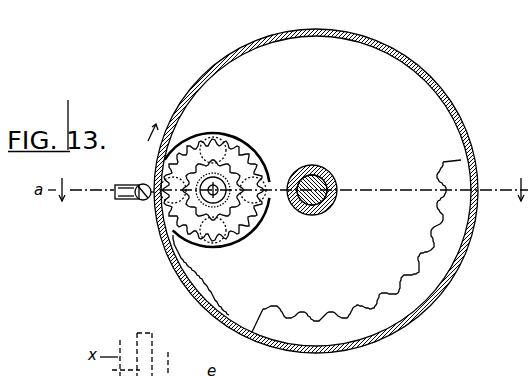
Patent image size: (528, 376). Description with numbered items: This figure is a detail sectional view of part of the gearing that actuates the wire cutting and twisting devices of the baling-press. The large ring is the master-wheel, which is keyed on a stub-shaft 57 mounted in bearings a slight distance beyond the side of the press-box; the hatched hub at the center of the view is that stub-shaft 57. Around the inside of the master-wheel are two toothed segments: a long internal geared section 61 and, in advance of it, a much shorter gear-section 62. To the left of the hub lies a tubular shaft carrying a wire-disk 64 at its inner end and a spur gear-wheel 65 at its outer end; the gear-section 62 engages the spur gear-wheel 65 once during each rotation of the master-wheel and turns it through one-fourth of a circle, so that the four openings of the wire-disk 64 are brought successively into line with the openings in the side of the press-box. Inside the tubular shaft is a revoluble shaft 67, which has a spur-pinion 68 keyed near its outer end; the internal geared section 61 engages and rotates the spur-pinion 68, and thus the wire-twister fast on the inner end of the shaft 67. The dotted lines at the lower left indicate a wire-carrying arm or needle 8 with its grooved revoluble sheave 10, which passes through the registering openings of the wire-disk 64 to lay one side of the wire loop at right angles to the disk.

The wire-carrying arms or needles 8 is at (139, 187).
The wire-carrying revoluble sheave 10 is at (122, 200).
The stub-shaft 57 is at (334, 178).
The internal geared section 61 is at (436, 206).
The gear-section 62 is at (206, 288).
The wire-disk 64 is at (197, 143).
The spur gear-wheel 65 is at (228, 185).
The revoluble shaft 67 is at (232, 187).
The spur-pinion 68 is at (222, 167).